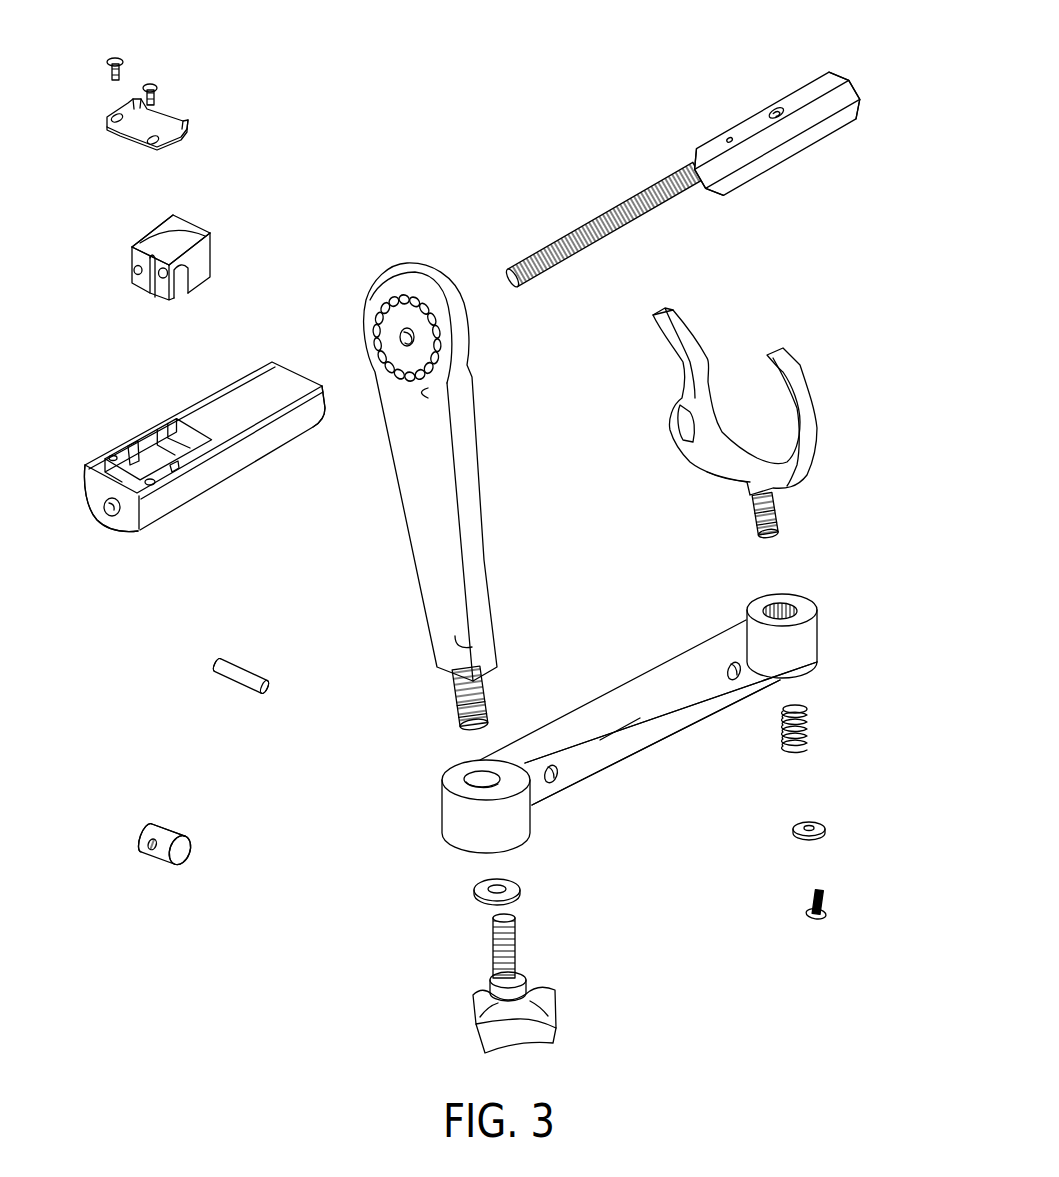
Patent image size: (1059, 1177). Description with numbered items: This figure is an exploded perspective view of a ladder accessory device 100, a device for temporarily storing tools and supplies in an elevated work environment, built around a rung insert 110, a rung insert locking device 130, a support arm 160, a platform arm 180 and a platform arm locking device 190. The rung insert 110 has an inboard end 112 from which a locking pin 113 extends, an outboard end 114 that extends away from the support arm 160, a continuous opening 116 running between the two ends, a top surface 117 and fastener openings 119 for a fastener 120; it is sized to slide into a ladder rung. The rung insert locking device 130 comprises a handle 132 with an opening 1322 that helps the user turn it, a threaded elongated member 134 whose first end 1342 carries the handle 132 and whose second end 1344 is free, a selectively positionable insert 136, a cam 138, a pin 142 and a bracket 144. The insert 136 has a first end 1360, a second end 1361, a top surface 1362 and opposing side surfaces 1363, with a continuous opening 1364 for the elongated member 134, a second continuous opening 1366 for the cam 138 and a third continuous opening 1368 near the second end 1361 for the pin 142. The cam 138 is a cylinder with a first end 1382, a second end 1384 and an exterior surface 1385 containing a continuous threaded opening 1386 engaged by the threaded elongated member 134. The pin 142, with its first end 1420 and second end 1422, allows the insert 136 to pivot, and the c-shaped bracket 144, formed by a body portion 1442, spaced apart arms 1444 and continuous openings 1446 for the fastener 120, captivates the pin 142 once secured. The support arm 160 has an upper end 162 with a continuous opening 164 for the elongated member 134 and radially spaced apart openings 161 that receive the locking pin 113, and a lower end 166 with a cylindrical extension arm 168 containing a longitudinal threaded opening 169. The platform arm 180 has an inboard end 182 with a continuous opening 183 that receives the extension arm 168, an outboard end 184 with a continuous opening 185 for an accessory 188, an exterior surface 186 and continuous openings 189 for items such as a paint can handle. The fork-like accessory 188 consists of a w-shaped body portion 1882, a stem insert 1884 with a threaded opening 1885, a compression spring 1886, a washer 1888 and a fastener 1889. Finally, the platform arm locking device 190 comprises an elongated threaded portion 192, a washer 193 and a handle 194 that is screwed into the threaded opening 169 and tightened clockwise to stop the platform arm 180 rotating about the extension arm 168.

The ladder accessory device 100 is at (277, 995).
The rung insert 110 is at (246, 474).
The inboard end 112 is at (276, 382).
The locking pin 113 is at (332, 390).
The outboard end 114 is at (122, 521).
The continuous opening 116 is at (111, 512).
The top surface 117 is at (236, 411).
The fastener openings 119 is at (121, 452).
The fastener 120 is at (118, 58).
The rung insert locking device 130 is at (808, 77).
The handle 132 is at (831, 80).
The opening 1322 is at (766, 107).
The threaded elongated member 134 is at (600, 213).
The first end 1342 is at (713, 190).
The second end 1344 is at (521, 290).
The selectively positionable insert 136 is at (194, 219).
The first end 1360 is at (198, 233).
The second end 1361 is at (147, 248).
The top surface 1362 is at (171, 238).
The opposing side surfaces 1363 is at (208, 257).
The continuous opening 1364 is at (147, 283).
The second continuous opening 1366 is at (189, 287).
The third continuous opening 1368 is at (172, 278).
The cam 138 is at (166, 814).
The first end 1382 is at (188, 853).
The second end 1384 is at (138, 827).
The exterior surface 1385 is at (168, 832).
The continuous threaded opening 1386 is at (152, 853).
The pin 142 is at (244, 661).
The first end 1420 is at (268, 688).
The second end 1422 is at (213, 666).
The bracket 144 is at (193, 120).
The body portion 1442 is at (130, 128).
The spaced apart arms 1444 is at (131, 111).
The continuous openings 1446 is at (151, 146).
The support arm 160 is at (483, 473).
The radially spaced apart openings 161 is at (409, 304).
The upper end 162 is at (429, 397).
The continuous opening 164 is at (403, 346).
The lower end 166 is at (473, 647).
The extension arm 168 is at (491, 703).
The longitudinal threaded opening 169 is at (456, 715).
The platform arm 180 is at (648, 757).
The inboard end 182 is at (538, 803).
The continuous opening 183 is at (474, 777).
The outboard end 184 is at (758, 657).
The continuous opening 185 is at (784, 604).
The exterior surface 186 is at (637, 725).
The accessory 188 is at (700, 330).
The body portion 1882 is at (813, 378).
The stem insert 1884 is at (781, 510).
The threaded opening 1885 is at (758, 528).
The compression spring 1886 is at (808, 717).
The washer 1888 is at (793, 829).
The fastener 1889 is at (808, 912).
The continuous openings 189 is at (742, 680).
The platform arm locking device 190 is at (484, 980).
The elongated threaded portion 192 is at (516, 950).
The washer 193 is at (473, 892).
The handle 194 is at (556, 1030).